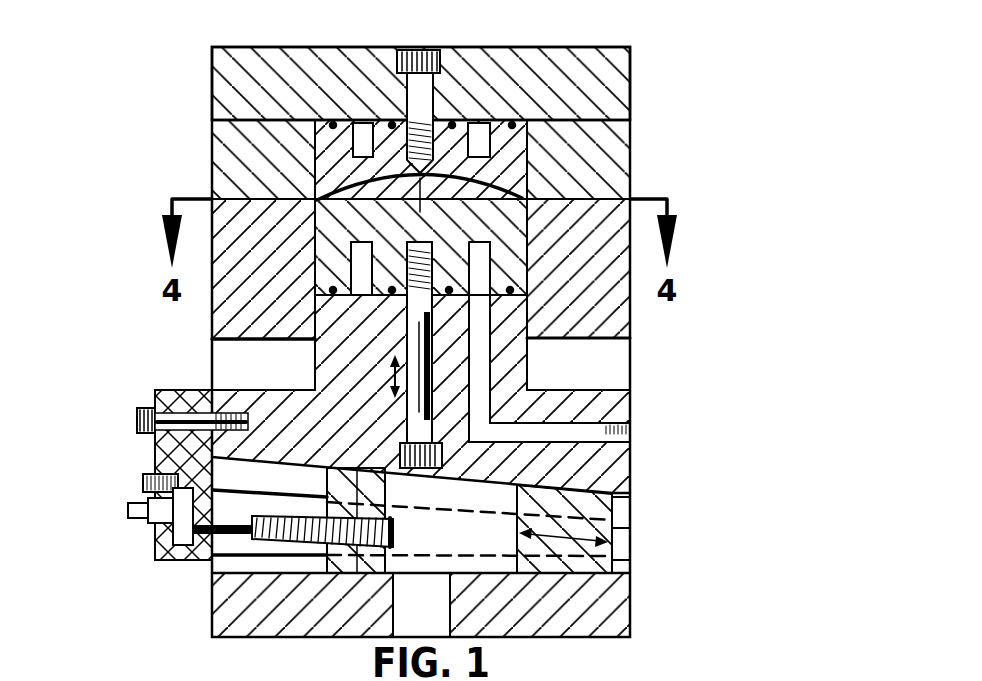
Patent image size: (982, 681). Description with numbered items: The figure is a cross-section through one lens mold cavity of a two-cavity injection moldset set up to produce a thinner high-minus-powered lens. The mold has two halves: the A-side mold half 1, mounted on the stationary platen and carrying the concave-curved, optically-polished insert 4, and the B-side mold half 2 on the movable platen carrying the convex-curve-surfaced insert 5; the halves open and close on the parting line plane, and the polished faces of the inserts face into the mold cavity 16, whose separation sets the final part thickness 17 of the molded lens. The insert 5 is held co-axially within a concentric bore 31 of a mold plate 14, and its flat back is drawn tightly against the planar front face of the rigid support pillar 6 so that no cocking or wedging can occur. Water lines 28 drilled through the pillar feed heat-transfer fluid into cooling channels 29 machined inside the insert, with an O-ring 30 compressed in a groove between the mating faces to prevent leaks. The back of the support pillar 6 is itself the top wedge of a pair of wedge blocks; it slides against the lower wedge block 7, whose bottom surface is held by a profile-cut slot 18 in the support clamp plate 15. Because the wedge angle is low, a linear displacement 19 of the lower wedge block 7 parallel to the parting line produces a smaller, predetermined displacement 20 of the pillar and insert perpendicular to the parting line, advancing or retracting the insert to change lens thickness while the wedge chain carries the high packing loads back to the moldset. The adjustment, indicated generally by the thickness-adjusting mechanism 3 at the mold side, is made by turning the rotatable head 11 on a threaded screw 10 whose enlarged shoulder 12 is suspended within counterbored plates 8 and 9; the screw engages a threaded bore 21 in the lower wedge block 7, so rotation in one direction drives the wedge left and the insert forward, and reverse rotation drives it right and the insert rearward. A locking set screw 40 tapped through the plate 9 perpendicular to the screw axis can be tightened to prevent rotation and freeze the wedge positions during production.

The A-side mold half 1 is at (706, 148).
The B-side mold half 2 is at (714, 251).
The side mounting assembly 3 is at (112, 398).
The concave-curved mold insert 4 is at (457, 124).
The convex-curve-surfaced mold insert 5 is at (310, 258).
The support pillar 6 is at (630, 390).
The lower wedge block 7 is at (590, 482).
The counterbored plate 8 is at (173, 397).
The counterbored plate 9 is at (200, 397).
The threaded screw 10 is at (207, 567).
The rotatable head 11 is at (138, 497).
The enlarged shoulder 12 is at (157, 537).
The mold plate 14 is at (593, 307).
The support clamp plate 15 is at (617, 612).
The mold cavity 16 is at (330, 195).
The final part thickness 17 is at (313, 198).
The profile-cut slot 18 is at (620, 565).
The linear displacement 19 is at (613, 513).
The linear displacement 20 is at (390, 375).
The nozzle bore 21 is at (215, 470).
The water lines 28 is at (628, 430).
The cooling channels 29 is at (482, 246).
The O-ring 30 is at (392, 120).
The concentric bore 31 is at (527, 242).
The locking set screw 40 is at (147, 479).